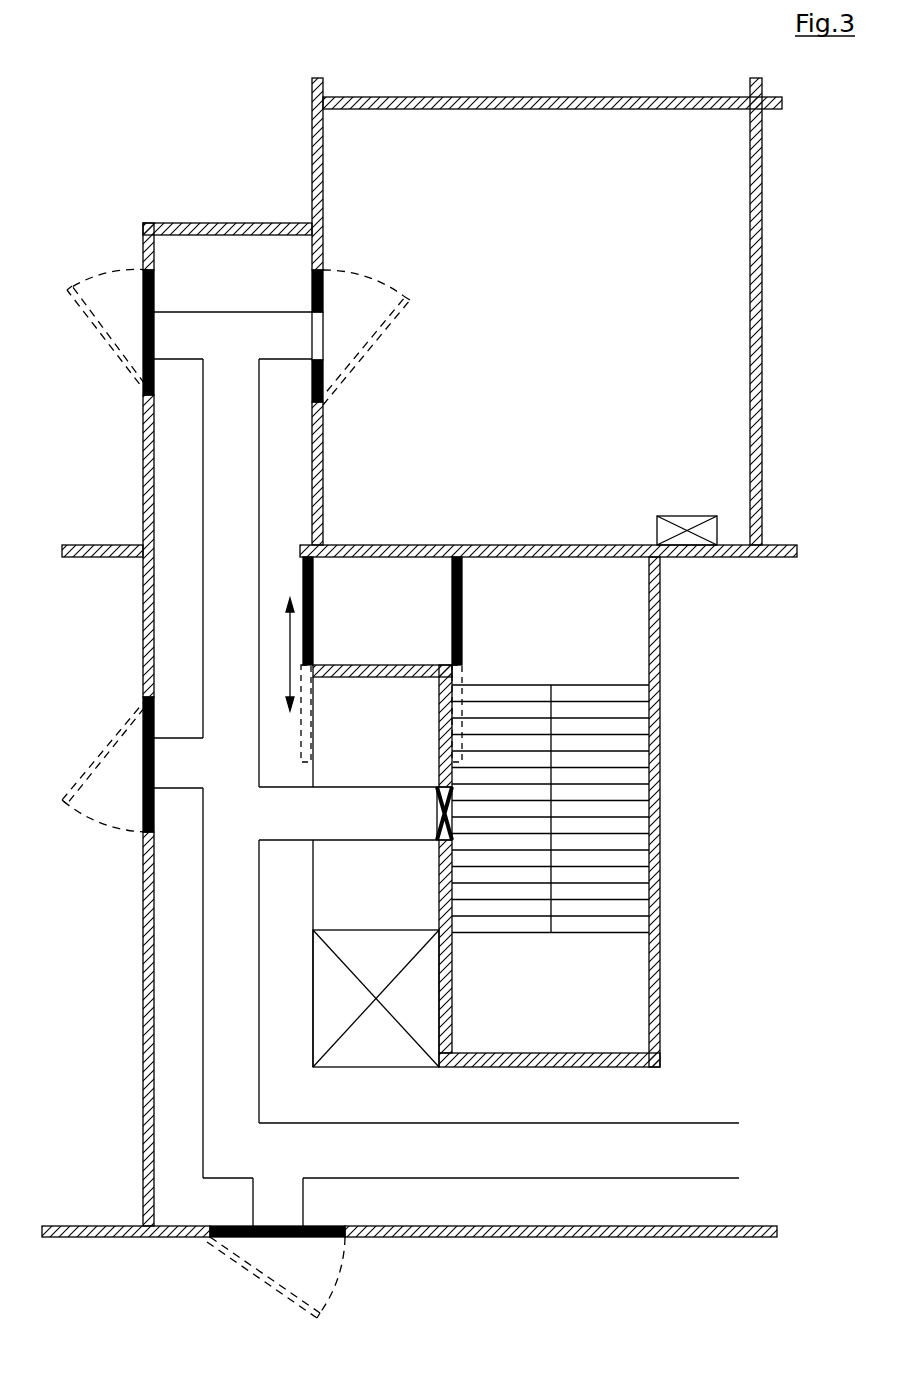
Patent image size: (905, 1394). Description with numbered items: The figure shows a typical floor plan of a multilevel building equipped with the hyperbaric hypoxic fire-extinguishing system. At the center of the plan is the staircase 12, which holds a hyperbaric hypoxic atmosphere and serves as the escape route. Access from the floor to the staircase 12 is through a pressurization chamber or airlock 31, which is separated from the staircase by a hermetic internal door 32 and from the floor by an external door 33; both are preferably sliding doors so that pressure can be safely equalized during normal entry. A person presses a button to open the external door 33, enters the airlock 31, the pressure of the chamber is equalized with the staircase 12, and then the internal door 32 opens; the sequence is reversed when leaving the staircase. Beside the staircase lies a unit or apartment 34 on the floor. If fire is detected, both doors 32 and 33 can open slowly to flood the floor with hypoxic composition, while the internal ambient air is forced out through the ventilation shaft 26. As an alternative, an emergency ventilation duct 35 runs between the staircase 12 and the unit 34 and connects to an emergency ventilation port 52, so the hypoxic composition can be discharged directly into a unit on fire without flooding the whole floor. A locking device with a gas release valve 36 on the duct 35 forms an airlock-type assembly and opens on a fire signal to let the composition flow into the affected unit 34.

The staircase 12 is at (660, 700).
The ventilation shaft 26 is at (665, 530).
The pressurization chamber or airlock 31 is at (382, 638).
The hermetic internal door 32 is at (463, 637).
The external door 33 is at (302, 585).
The unit or apartment 34 is at (547, 311).
The emergency ventilation duct 35 is at (328, 813).
The locking device with gas release valve 36 is at (435, 817).
The emergency ventilation port 52 is at (318, 337).